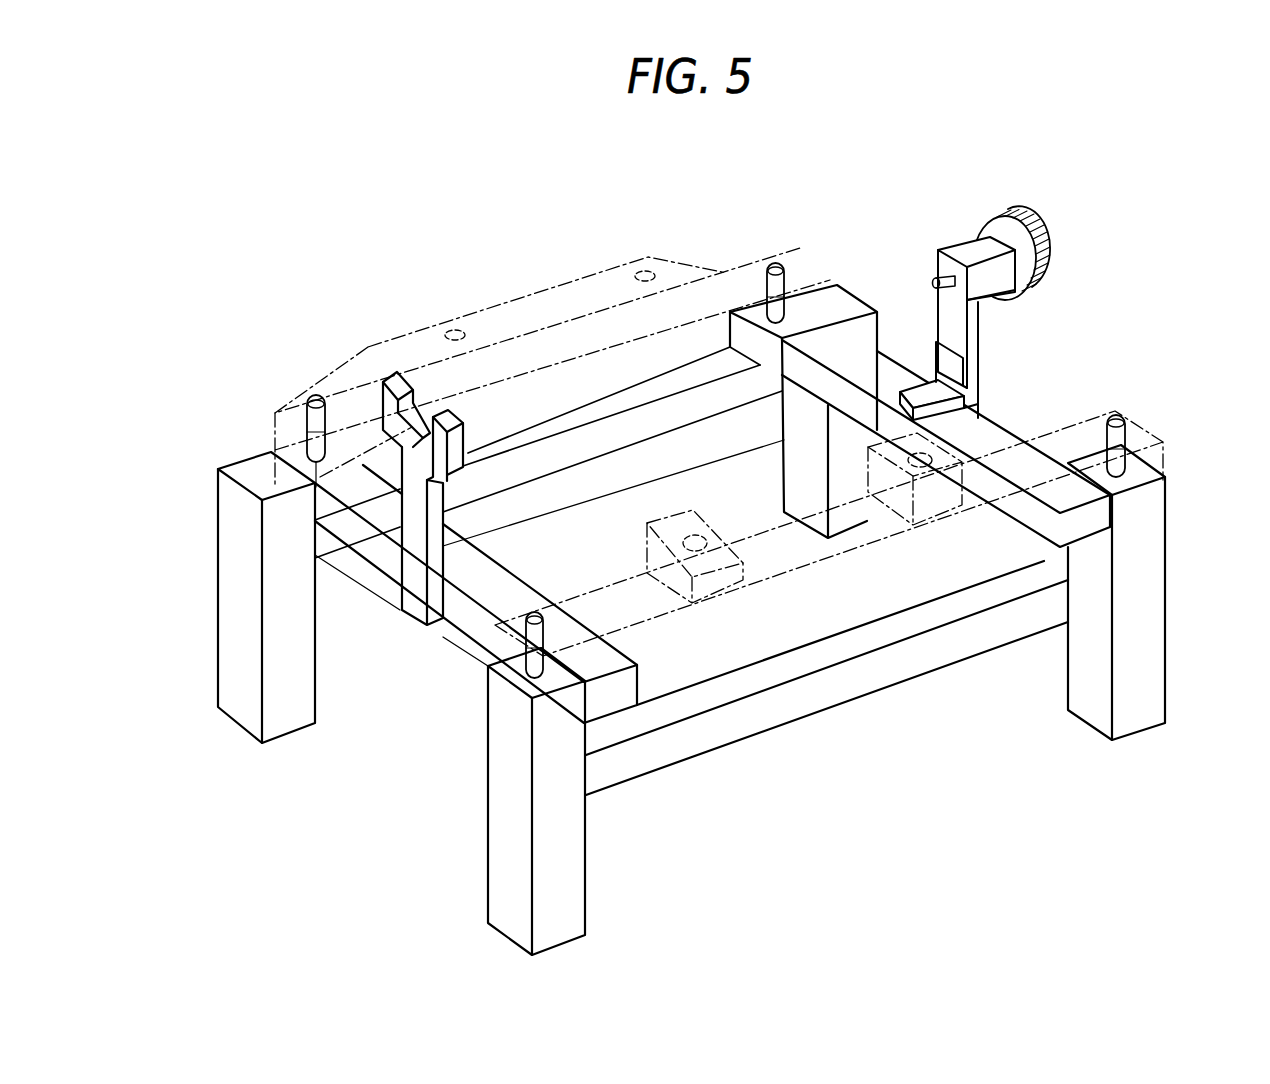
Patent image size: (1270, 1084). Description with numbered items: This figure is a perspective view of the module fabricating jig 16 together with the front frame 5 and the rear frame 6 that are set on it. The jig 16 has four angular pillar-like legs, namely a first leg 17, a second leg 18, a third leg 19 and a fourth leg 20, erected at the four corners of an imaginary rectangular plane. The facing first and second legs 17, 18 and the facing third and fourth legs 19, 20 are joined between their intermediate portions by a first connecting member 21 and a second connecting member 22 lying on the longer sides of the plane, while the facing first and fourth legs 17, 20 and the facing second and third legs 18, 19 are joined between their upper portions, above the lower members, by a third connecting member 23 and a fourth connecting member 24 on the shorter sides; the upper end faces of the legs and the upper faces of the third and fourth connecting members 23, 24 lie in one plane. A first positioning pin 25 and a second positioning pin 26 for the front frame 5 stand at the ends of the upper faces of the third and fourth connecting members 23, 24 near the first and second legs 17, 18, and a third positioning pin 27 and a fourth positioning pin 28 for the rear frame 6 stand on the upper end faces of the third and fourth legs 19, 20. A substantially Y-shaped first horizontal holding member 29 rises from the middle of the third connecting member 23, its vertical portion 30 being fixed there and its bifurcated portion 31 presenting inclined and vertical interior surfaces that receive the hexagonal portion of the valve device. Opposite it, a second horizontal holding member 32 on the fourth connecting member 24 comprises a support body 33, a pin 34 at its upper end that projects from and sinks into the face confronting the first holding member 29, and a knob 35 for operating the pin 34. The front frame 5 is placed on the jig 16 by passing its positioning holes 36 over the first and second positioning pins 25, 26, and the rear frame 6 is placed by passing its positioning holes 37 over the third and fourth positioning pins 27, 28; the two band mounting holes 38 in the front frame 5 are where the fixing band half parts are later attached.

The front frame 5 is at (540, 290).
The rear frame 6 is at (775, 521).
The module fabricating jig 16 is at (1066, 329).
The first leg 17 is at (233, 646).
The second leg 18 is at (847, 303).
The third leg 19 is at (1152, 670).
The fourth leg 20 is at (503, 850).
The first connecting member 21 is at (699, 392).
The second connecting member 22 is at (786, 706).
The third connecting member 23 is at (466, 628).
The fourth connecting member 24 is at (993, 436).
The first positioning pin 25 is at (316, 395).
The second positioning pin 26 is at (783, 268).
The third positioning pin 27 is at (1115, 417).
The fourth positioning pin 28 is at (533, 613).
The first horizontal holding member 29 is at (373, 386).
The vertical portion 30 is at (413, 558).
The bifurcated portion 31 is at (478, 423).
The second horizontal holding member 32 is at (960, 233).
The support body 33 is at (972, 372).
The pin 34 is at (937, 285).
The knurled knob 35 is at (1048, 236).
The positioning holes 36 is at (322, 418).
The positioning holes 37 is at (543, 630).
The band mounting holes 38 is at (452, 328).